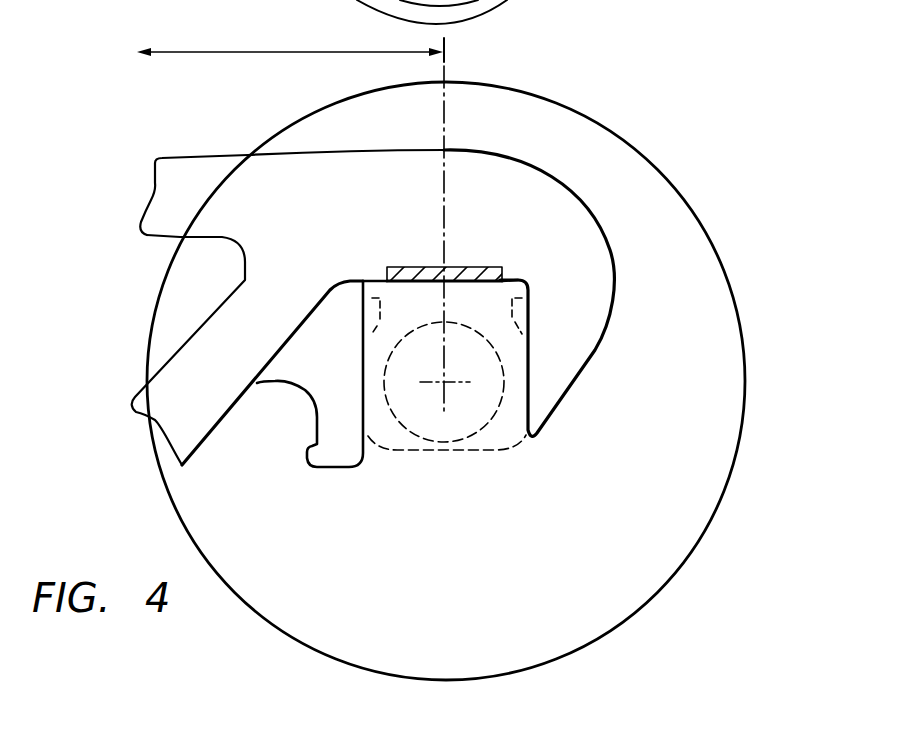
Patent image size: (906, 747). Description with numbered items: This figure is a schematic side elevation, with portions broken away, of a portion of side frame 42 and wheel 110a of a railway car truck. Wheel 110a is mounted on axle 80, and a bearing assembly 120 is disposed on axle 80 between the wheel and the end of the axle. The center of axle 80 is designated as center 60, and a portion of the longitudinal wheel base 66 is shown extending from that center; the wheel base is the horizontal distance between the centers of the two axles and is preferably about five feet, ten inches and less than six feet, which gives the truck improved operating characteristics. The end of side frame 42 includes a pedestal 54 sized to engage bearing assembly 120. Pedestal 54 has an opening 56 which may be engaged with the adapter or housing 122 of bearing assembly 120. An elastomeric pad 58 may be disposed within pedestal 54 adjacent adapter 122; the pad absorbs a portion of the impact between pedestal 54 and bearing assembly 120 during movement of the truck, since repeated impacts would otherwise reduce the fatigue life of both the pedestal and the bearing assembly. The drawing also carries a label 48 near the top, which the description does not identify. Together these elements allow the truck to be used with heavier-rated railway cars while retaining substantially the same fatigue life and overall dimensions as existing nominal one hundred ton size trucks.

The side frame 42 is at (201, 151).
The motor housing 48 is at (338, 2).
The pedestal 54 is at (617, 272).
The opening 56 is at (529, 424).
The elastomeric pad 58 is at (458, 281).
The center of axle 60 is at (446, 382).
The longitudinal wheel base 66 is at (236, 51).
The axle 80 is at (444, 444).
The wheel 110a is at (719, 510).
The bearing assembly 120 is at (380, 423).
The adapter or housing 122 is at (385, 310).